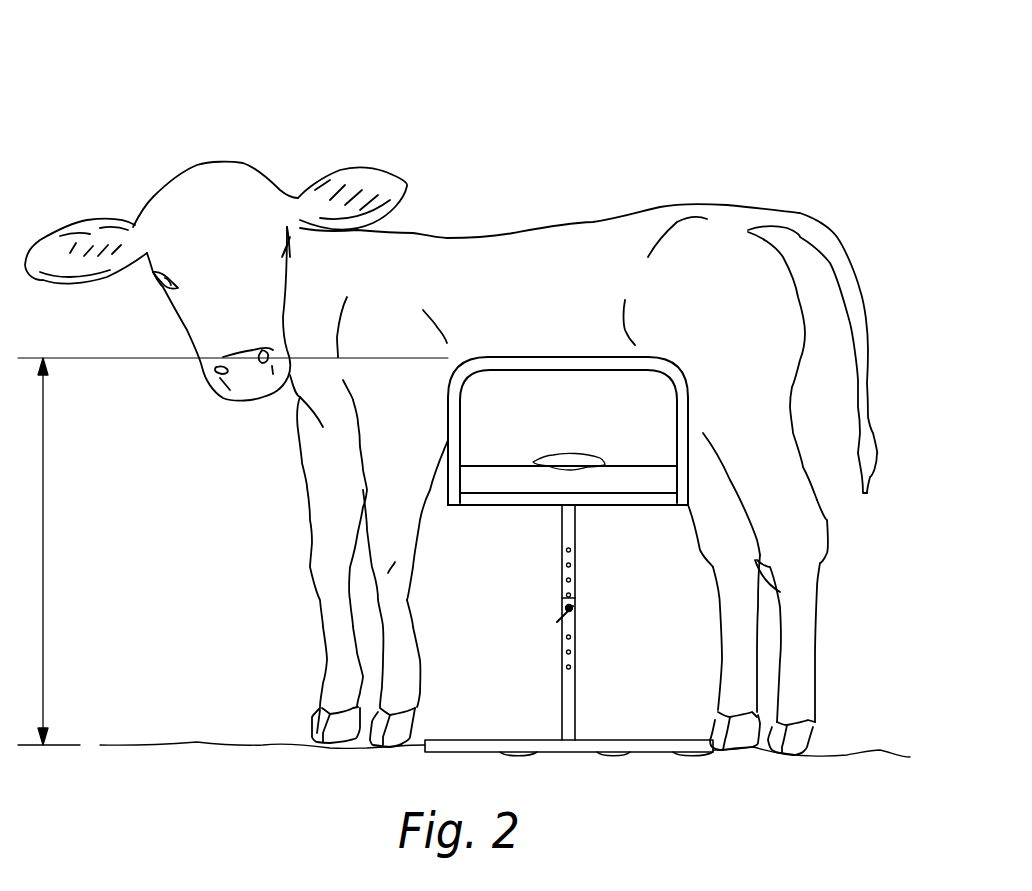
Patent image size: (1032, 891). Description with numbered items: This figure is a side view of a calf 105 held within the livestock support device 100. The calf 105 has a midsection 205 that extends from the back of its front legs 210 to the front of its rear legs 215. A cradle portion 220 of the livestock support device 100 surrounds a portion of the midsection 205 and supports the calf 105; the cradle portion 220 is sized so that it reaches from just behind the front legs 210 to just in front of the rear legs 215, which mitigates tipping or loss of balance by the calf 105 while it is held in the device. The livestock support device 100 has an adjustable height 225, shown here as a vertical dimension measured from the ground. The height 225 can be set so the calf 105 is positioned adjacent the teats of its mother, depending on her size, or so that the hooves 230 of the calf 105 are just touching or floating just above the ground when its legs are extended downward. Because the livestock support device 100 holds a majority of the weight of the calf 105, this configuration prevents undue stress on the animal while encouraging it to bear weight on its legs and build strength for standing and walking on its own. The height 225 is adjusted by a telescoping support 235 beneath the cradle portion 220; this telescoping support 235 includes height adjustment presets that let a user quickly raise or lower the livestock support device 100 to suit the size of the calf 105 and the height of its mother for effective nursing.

The livestock support device 100 is at (525, 532).
The calf 105 is at (798, 162).
The midsection 205 is at (568, 287).
The front legs 210 is at (310, 542).
The rear legs 215 is at (717, 633).
The cradle portion 220 is at (433, 503).
The height 225 is at (43, 582).
The hooves 230 is at (330, 717).
The telescoping support 235 is at (575, 615).